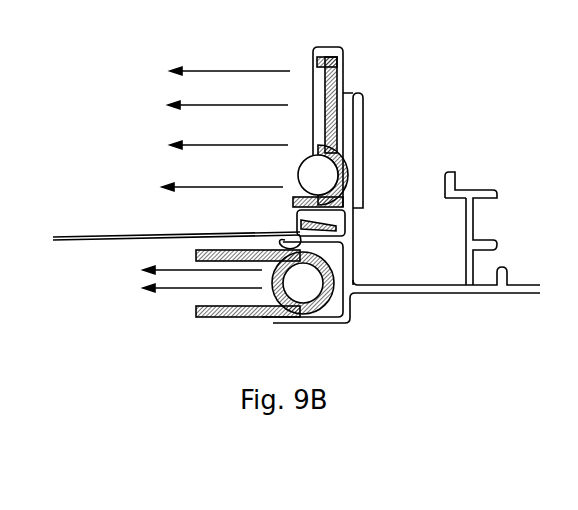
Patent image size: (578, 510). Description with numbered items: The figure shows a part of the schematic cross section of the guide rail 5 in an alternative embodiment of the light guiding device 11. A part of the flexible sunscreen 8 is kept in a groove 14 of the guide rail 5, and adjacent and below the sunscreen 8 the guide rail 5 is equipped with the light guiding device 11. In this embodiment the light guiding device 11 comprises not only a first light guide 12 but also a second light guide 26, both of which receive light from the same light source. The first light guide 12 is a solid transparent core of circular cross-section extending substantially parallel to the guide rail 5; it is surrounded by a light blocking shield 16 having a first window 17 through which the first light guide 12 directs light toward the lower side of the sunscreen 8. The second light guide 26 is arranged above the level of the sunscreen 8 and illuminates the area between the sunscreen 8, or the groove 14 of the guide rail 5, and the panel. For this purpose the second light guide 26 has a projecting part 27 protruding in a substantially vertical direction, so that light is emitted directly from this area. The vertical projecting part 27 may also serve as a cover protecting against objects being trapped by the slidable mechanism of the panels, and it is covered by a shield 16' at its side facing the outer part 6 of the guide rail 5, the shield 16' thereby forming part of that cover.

The guide rail 5 is at (423, 295).
The outer part of guide rail 6 is at (442, 228).
The flexible sunscreen 8 is at (80, 237).
The light guiding device 11 is at (352, 298).
The first light guide 12 is at (303, 285).
The groove 14 is at (342, 228).
The light blocking shield 16 is at (234, 320).
The shield 16' is at (380, 141).
The first window 17 is at (196, 297).
The second light guide 26 is at (320, 175).
The projecting part 27 is at (318, 108).